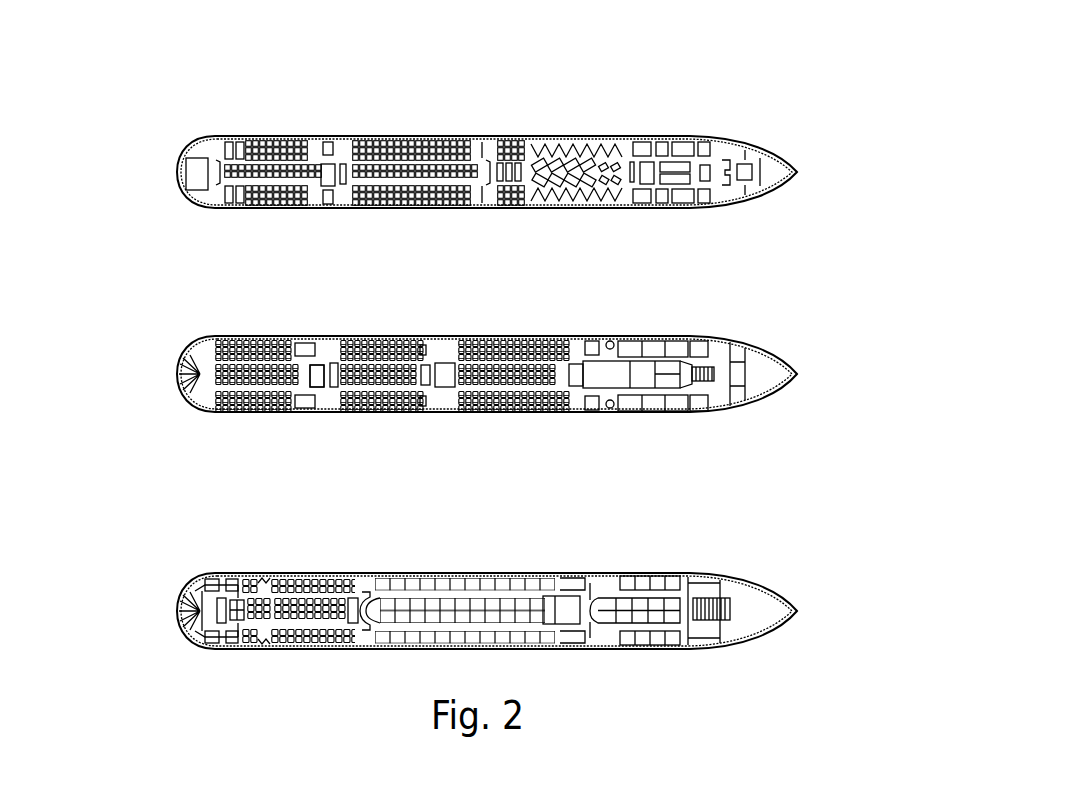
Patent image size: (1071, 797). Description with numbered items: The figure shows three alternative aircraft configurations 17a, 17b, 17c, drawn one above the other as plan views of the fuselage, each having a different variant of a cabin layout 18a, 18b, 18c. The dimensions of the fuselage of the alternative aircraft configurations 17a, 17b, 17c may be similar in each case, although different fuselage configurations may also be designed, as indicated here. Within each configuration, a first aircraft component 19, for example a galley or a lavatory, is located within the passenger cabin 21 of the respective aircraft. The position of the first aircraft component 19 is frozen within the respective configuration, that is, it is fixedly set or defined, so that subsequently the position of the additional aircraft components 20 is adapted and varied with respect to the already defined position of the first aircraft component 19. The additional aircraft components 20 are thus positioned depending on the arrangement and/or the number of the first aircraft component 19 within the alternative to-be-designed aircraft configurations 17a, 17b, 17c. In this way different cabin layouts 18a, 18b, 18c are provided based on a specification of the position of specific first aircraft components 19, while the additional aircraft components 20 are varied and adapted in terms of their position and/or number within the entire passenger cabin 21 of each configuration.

The alternative aircraft configuration 17a is at (487, 172).
The alternative aircraft configuration 17b is at (487, 374).
The alternative aircraft configuration 17c is at (487, 611).
The cabin layout 18a is at (583, 158).
The cabin layout 18b is at (381, 353).
The cabin layout 18c is at (413, 594).
The first aircraft component 19 is at (318, 168).
The additional aircraft components 20 is at (400, 172).
The passenger cabin 21 is at (166, 158).